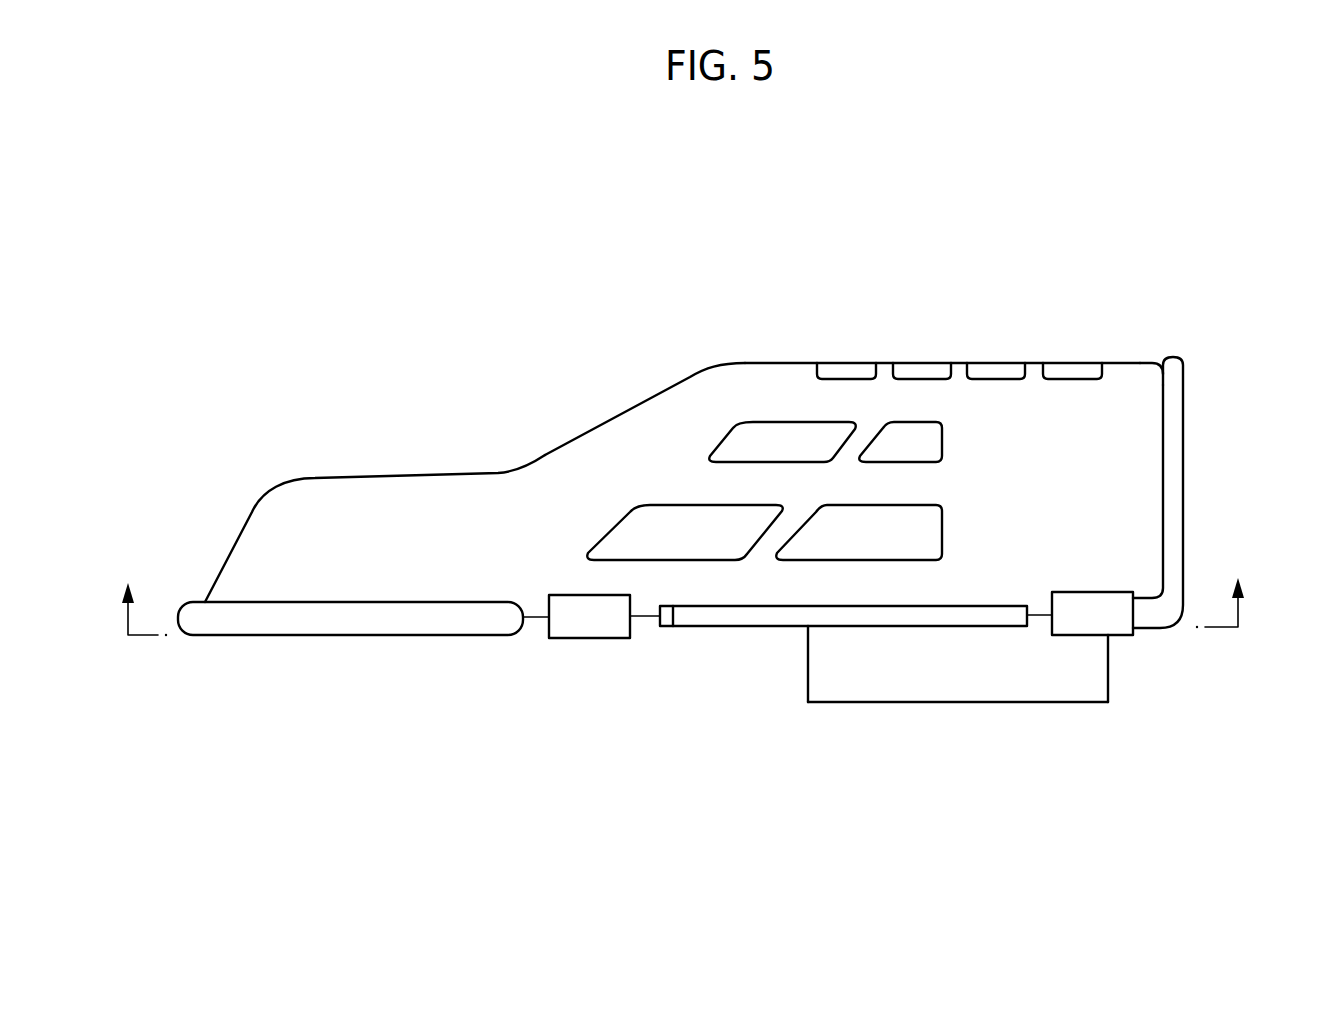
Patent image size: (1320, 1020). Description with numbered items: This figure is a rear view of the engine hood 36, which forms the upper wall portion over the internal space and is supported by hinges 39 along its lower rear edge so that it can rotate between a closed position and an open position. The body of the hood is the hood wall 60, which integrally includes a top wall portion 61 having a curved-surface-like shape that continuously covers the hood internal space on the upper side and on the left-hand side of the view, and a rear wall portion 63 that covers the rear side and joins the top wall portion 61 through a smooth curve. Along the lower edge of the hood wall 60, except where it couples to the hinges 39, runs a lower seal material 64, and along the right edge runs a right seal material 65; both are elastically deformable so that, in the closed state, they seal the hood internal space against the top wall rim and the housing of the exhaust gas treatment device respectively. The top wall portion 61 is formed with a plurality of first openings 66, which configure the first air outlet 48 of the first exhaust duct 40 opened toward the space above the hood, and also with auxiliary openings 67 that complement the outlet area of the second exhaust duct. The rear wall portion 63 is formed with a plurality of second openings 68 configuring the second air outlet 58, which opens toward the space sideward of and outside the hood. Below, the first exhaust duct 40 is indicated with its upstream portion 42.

The engine hood 36 is at (722, 270).
The hinges 39 is at (597, 625).
The first exhaust duct 40 is at (958, 709).
The upstream portion 42 is at (858, 700).
The first air outlet 48 is at (1100, 352).
The second air outlet 58 is at (775, 590).
The hood wall 60 is at (660, 378).
The top wall portion 61 is at (553, 445).
The rear wall portion 63 is at (1102, 507).
The lower seal material 64 is at (400, 624).
The right seal material 65 is at (1183, 413).
The first openings 66 is at (998, 363).
The auxiliary openings 67 is at (853, 365).
The second openings 68 is at (892, 438).